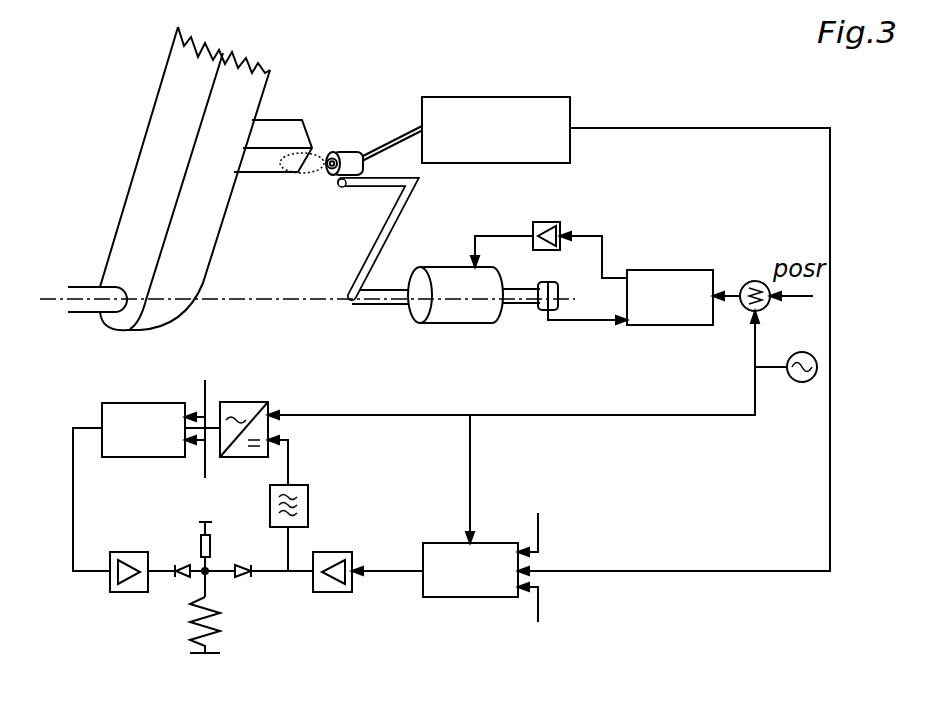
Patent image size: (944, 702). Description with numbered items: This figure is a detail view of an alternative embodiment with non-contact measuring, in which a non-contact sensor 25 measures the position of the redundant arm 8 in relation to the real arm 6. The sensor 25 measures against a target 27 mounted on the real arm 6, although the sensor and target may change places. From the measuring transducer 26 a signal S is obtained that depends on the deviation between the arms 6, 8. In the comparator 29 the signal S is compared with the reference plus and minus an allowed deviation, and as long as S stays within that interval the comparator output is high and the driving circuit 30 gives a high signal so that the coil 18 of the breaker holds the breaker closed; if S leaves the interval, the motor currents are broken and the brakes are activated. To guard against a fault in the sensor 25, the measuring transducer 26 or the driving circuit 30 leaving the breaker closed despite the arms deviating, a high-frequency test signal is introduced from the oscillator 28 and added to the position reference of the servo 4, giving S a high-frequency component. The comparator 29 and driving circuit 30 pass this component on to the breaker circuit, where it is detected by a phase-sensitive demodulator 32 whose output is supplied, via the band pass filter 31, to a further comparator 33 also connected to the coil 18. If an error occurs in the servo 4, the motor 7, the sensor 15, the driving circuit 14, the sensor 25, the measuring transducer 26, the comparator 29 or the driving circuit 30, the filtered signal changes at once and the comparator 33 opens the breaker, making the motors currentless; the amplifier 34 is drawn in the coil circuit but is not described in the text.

The servo 4 is at (670, 270).
The real arm 6 is at (205, 236).
The motor 7 is at (452, 320).
The redundant arm 8 is at (400, 212).
The driving circuit 14 is at (550, 222).
The sensor 15 is at (548, 282).
The coil 18 is at (223, 615).
The non-contact sensor 25 is at (343, 152).
The measuring transducer 26 is at (493, 97).
The target 27 is at (279, 122).
The oscillator 28 is at (800, 382).
The comparator 29 is at (455, 597).
The driving circuit 30 is at (333, 552).
The band pass filter 31 is at (308, 504).
The phase-sensitive demodulator 32 is at (243, 402).
The further comparator 33 is at (147, 402).
The amplifier 34 is at (128, 592).